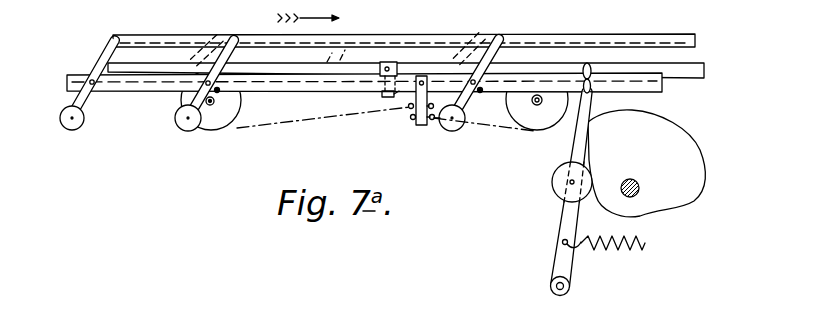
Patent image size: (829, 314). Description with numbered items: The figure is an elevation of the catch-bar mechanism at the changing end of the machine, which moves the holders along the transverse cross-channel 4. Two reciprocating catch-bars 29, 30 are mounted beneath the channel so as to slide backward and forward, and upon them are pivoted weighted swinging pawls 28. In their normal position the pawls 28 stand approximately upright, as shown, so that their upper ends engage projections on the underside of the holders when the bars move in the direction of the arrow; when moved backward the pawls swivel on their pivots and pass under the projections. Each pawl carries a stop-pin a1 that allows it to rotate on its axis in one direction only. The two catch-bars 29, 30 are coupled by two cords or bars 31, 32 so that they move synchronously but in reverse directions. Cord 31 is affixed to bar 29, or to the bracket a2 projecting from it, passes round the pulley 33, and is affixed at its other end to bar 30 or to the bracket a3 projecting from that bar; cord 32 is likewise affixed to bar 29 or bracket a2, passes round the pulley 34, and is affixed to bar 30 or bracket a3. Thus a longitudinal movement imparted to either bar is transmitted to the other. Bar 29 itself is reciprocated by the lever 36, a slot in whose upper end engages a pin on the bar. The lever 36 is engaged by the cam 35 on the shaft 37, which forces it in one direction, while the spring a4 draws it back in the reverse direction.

The transverse channel 4 is at (404, 28).
The weighted swinging pawl 28 is at (89, 85).
The catch-bar 29 is at (77, 77).
The catch-bar 30 is at (698, 70).
The cord 31 is at (323, 130).
The cord 32 is at (484, 137).
The pulley 33 is at (215, 127).
The pulley 34 is at (537, 100).
The cam 35 is at (646, 163).
The lever 36 is at (561, 179).
The shaft 37 is at (640, 187).
The stop-pin a1 is at (222, 91).
The bracket a2 is at (424, 114).
The bracket a3 is at (384, 93).
The spring a4 is at (623, 240).